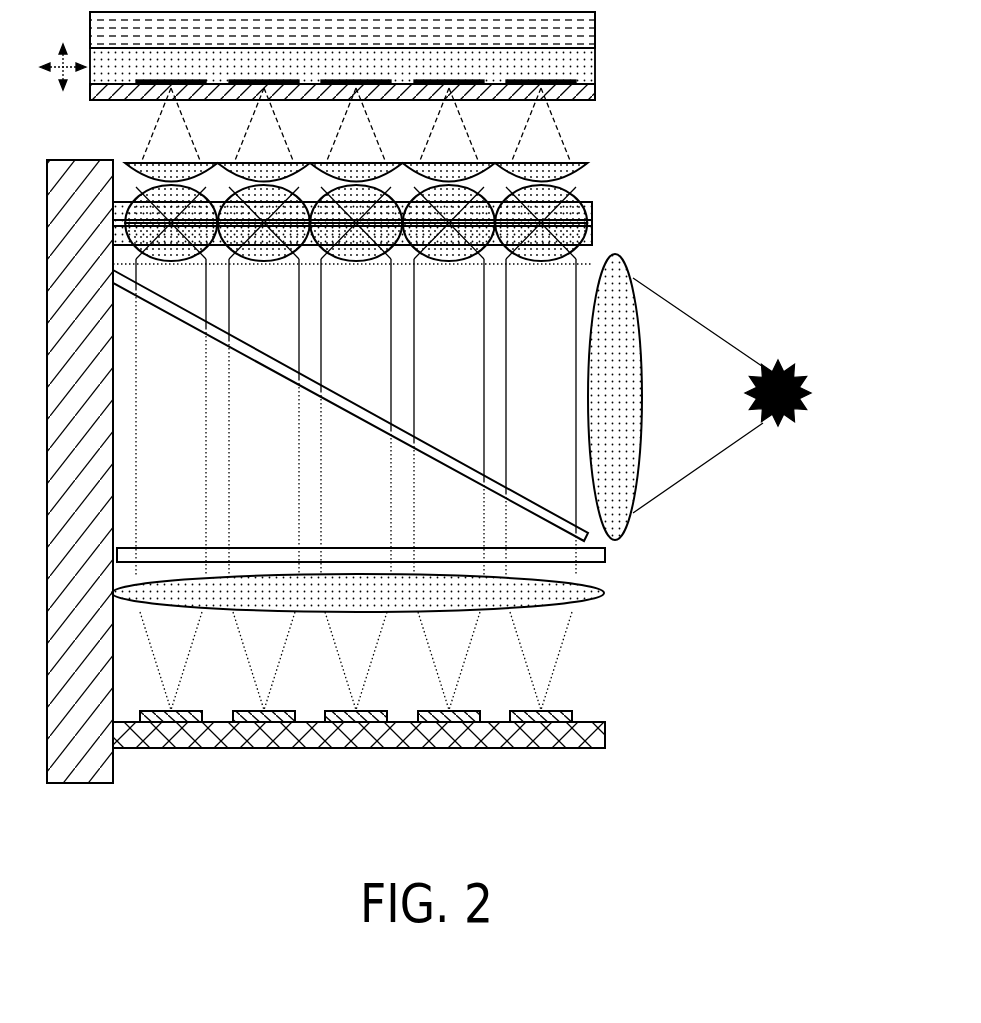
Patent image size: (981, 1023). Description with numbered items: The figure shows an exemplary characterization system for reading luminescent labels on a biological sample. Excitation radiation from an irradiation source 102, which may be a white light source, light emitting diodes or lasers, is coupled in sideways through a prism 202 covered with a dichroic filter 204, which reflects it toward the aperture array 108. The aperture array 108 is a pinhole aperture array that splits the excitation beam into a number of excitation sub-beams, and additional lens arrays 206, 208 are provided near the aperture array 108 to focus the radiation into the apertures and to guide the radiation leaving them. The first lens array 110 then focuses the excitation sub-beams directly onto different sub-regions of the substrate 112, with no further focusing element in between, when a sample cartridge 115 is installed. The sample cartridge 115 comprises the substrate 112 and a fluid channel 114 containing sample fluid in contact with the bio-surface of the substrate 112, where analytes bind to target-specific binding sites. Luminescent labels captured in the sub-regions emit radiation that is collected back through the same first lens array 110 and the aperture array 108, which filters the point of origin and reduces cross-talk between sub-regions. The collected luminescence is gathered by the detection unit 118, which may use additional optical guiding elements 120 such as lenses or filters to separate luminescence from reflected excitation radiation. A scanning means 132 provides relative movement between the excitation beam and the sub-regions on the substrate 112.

The irradiation source 102 is at (787, 428).
The aperture array 108 is at (594, 220).
The first lens array 110 is at (596, 165).
The substrate 112 is at (597, 96).
The fluid channel 114 is at (597, 62).
The sample cartridge 115 is at (597, 30).
The detection unit 118 is at (607, 593).
The additional optical guiding elements 120 is at (607, 733).
The scanning means 132 is at (80, 785).
The prism 202 is at (527, 533).
The dichroic filter 204 is at (437, 450).
The additional lens array 206 is at (540, 262).
The additional lens array 208 is at (600, 190).